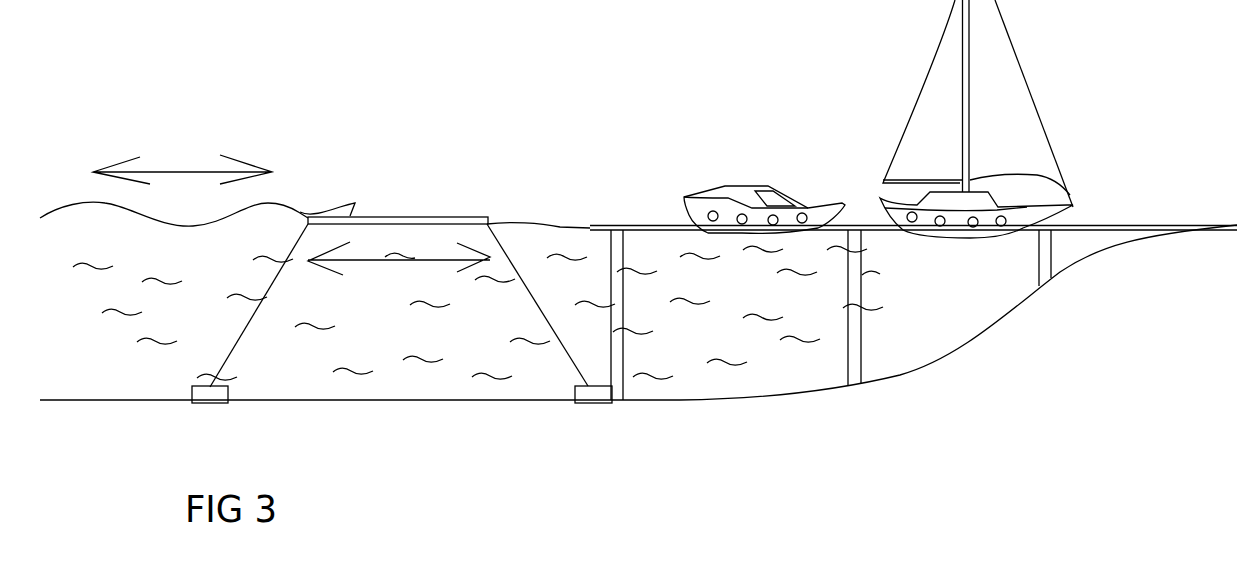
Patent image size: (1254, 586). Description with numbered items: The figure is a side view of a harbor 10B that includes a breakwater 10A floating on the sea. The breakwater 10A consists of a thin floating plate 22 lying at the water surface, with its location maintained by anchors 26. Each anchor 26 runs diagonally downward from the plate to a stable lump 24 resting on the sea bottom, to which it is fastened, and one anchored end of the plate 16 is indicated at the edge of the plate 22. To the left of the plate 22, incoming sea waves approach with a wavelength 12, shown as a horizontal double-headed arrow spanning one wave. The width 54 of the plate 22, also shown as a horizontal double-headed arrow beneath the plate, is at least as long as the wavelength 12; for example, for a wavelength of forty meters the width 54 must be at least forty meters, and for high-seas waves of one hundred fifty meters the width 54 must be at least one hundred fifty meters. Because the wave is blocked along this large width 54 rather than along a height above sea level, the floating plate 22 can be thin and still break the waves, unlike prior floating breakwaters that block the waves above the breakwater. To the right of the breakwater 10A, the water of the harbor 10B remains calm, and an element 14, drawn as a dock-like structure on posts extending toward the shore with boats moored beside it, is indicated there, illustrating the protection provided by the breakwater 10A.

The breakwater 10A is at (426, 27).
The harbor 10B is at (281, 87).
The wavelength 12 is at (178, 160).
The dock / protected structure 14 is at (621, 136).
The end of the plate being anchored 16 is at (490, 217).
The floating plate 22 is at (400, 216).
The stable lump 24 is at (208, 397).
The anchor 26 is at (238, 343).
The short side (width) of the plate 54 is at (399, 271).